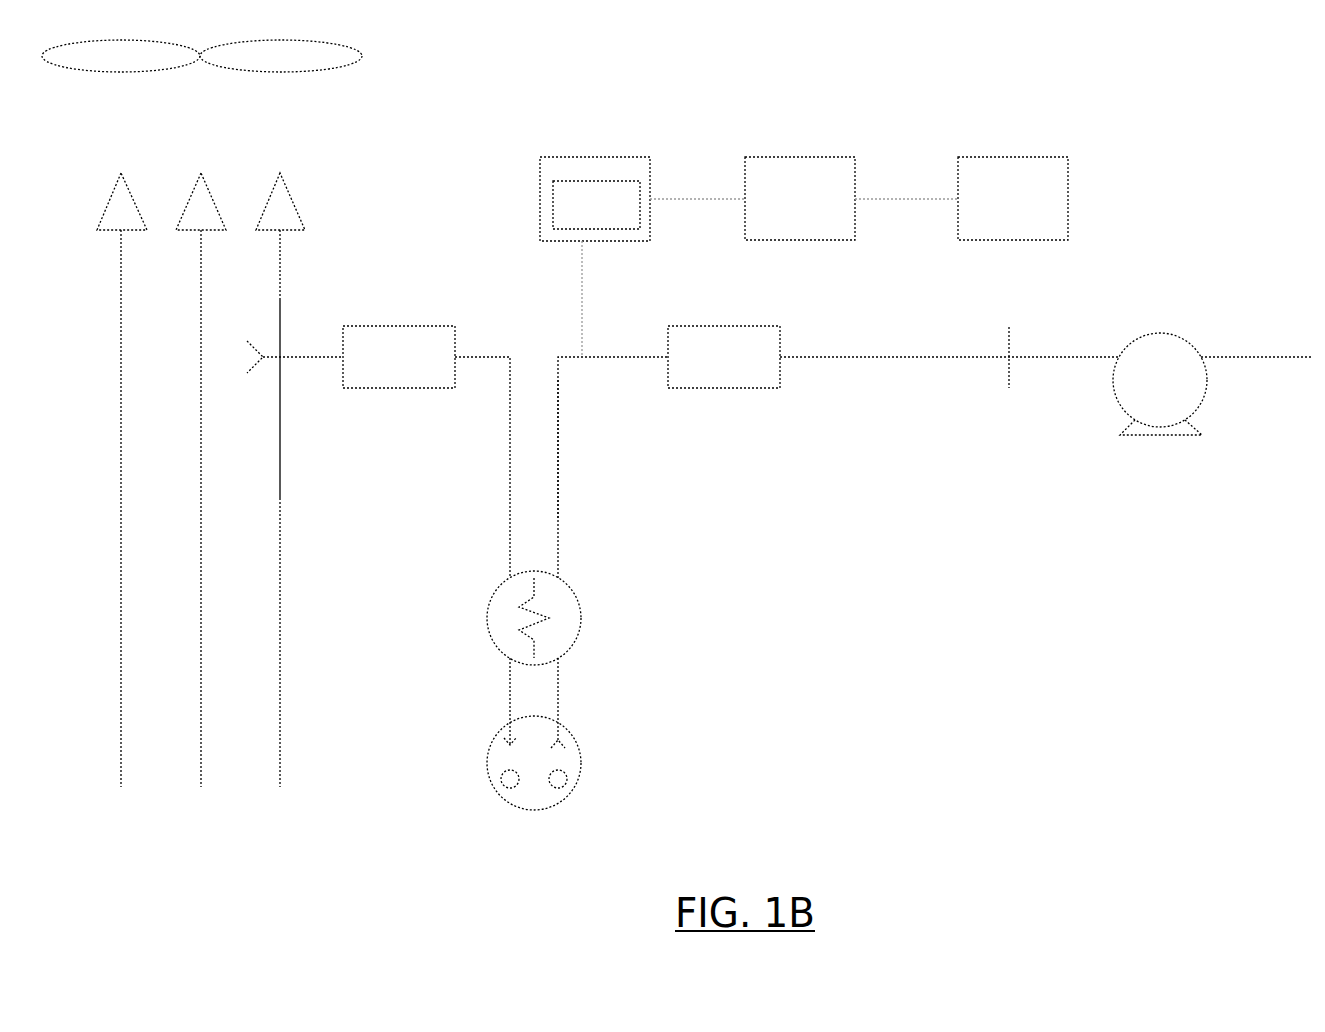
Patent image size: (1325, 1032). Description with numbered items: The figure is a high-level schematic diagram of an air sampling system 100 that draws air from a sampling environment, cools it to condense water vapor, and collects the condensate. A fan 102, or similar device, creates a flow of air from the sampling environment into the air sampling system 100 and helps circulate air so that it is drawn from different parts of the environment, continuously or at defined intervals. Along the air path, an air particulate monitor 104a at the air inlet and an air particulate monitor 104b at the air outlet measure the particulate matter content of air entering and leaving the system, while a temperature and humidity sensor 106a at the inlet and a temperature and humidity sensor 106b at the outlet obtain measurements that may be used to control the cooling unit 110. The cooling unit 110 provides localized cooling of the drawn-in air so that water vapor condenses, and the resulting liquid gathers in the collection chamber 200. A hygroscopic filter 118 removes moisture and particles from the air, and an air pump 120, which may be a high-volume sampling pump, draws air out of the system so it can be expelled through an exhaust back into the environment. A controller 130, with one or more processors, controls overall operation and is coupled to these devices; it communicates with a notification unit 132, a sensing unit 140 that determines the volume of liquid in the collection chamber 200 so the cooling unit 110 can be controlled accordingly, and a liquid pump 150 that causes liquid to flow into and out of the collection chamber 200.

The air sampling system 100 is at (1132, 183).
The fan 102 is at (318, 58).
The air particulate monitor 104a is at (394, 325).
The air particulate monitor 104b is at (718, 325).
The temperature and humidity sensor 106a is at (252, 443).
The temperature and humidity sensor 106b is at (562, 452).
The cooling unit 110 is at (580, 632).
The hygroscopic filter 118 is at (1009, 343).
The air pump 120 is at (1155, 331).
The controller 130 is at (624, 157).
The notification unit 132 is at (616, 242).
The sensing unit 140 is at (814, 159).
The liquid pump 150 is at (1033, 161).
The collection chamber 200 is at (580, 775).